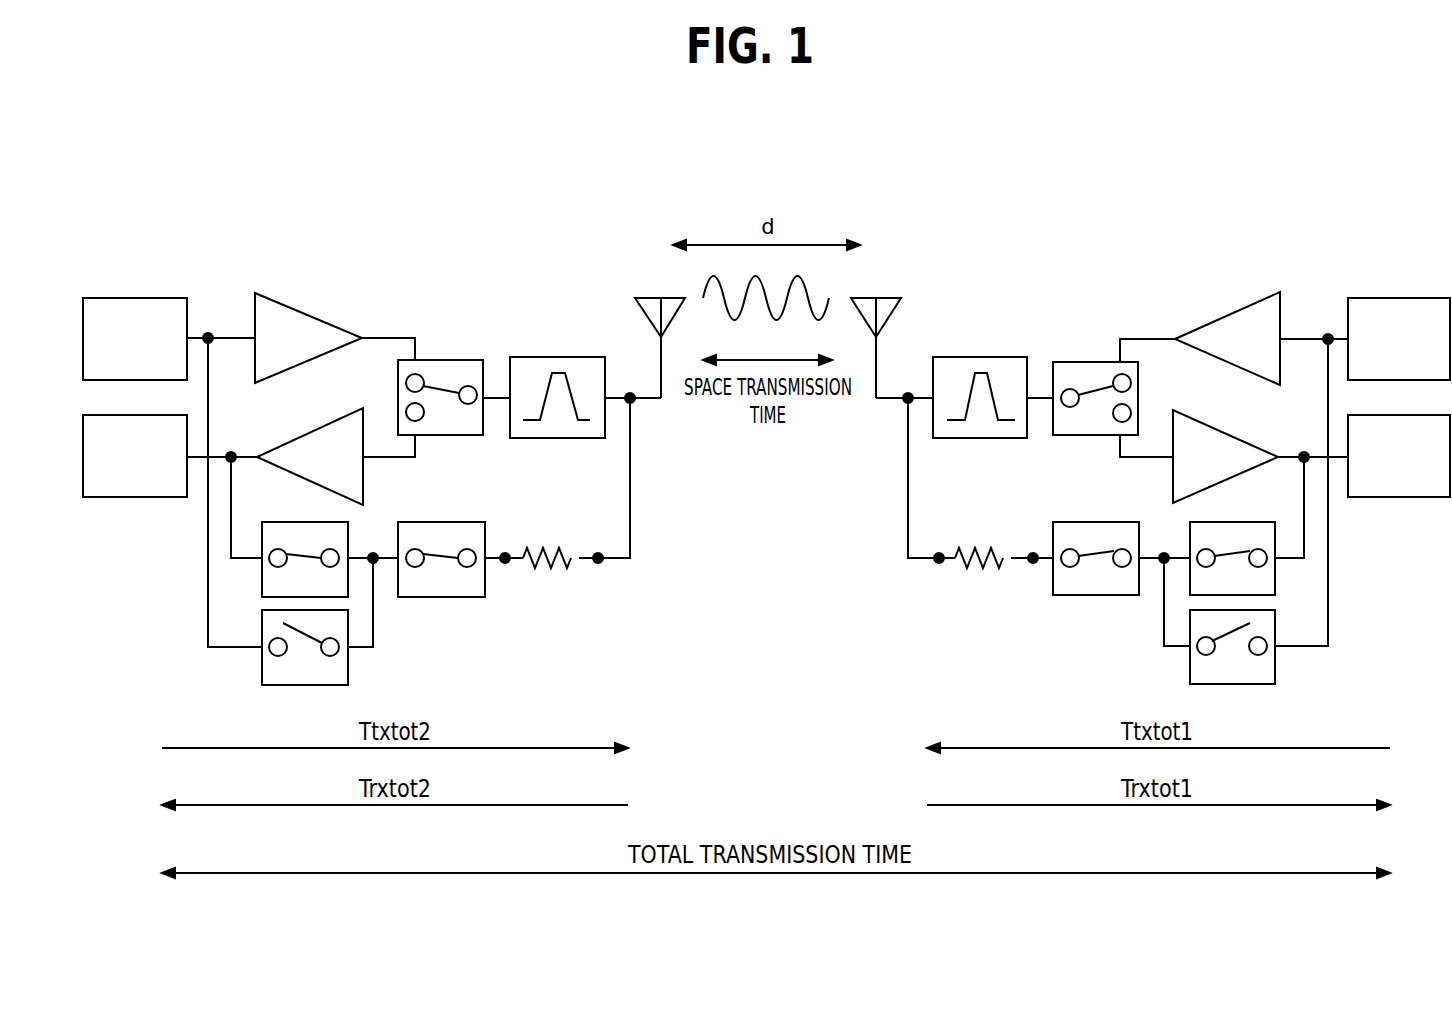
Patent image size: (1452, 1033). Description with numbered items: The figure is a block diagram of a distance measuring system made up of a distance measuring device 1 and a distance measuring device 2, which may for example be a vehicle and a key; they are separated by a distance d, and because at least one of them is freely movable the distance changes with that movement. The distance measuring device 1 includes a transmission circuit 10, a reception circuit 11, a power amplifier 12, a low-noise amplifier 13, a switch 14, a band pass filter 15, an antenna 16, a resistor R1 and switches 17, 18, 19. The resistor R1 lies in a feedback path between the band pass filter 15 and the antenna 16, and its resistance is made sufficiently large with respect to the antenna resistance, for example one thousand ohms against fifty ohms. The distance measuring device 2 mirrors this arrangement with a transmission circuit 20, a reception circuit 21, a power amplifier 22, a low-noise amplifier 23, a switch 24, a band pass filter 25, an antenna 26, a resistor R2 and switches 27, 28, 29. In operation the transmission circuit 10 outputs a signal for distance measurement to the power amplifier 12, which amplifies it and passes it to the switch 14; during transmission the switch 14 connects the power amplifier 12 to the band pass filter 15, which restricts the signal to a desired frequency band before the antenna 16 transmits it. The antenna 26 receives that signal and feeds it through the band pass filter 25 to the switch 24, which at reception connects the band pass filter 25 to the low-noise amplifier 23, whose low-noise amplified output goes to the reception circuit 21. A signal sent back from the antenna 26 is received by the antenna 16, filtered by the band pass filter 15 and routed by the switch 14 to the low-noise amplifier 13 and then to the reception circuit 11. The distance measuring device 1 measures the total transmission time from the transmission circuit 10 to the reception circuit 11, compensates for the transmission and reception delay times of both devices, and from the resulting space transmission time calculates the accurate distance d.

The distance measuring device 1 is at (1191, 225).
The distance measuring device 2 is at (422, 225).
The transmission circuit 10 is at (1396, 297).
The reception circuit 11 is at (1404, 498).
The power amplifier 12 is at (1231, 314).
The low-noise amplifier 13 is at (1230, 434).
The switch 14 is at (1098, 361).
The band pass filter 15 is at (982, 356).
The antenna 16 is at (885, 297).
The switch 17 is at (1098, 521).
The switch 18 is at (1275, 575).
The switch 19 is at (1275, 662).
The transmission circuit 20 is at (132, 297).
The reception circuit 21 is at (142, 498).
The power amplifier 22 is at (305, 314).
The low-noise amplifier 23 is at (304, 430).
The switch 24 is at (434, 359).
The band pass filter 25 is at (552, 356).
The antenna 26 is at (651, 297).
The switch 27 is at (436, 521).
The switch 28 is at (262, 577).
The switch 29 is at (262, 665).
The resistor R1 is at (979, 546).
The resistor R2 is at (547, 546).